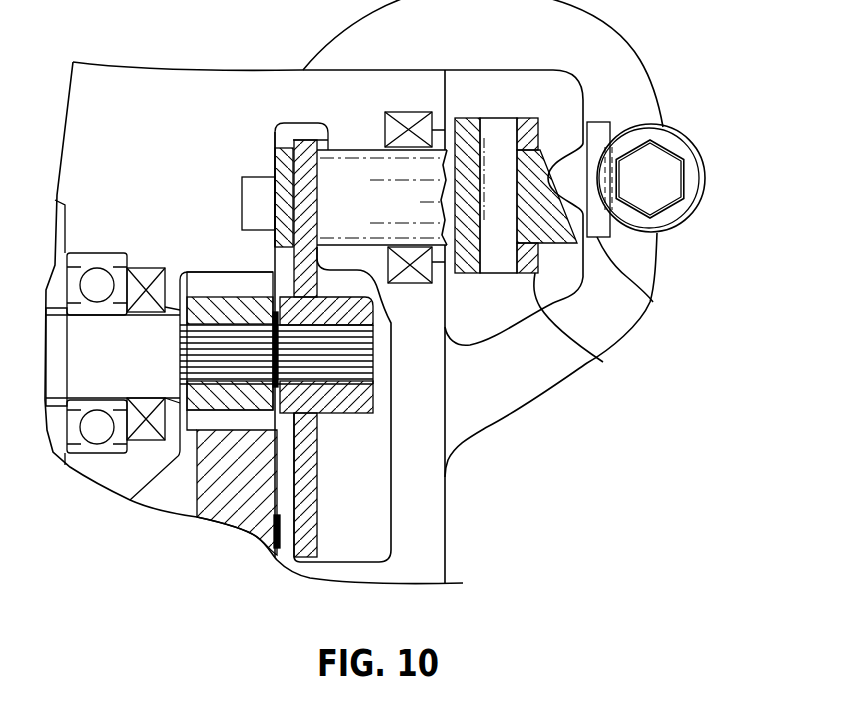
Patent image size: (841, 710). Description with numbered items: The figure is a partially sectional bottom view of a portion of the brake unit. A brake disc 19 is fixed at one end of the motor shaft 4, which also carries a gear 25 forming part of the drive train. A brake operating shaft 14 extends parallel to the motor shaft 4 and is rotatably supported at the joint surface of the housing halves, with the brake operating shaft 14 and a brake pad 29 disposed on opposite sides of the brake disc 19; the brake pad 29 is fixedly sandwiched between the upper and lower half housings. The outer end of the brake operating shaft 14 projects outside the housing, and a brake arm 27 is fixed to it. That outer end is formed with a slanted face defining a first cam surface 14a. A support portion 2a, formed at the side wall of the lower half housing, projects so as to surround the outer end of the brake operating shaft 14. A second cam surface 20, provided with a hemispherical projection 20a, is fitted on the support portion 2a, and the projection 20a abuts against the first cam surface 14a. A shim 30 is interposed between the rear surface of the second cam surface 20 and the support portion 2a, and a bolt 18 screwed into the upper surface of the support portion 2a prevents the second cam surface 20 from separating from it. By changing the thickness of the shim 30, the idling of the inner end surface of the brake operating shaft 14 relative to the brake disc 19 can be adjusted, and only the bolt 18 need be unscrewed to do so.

The support portion 2a is at (537, 378).
The motor shaft 4 is at (340, 384).
The brake operating shaft 14 is at (348, 150).
The first cam surface 14a is at (543, 158).
The bolt 18 is at (662, 160).
The brake disc 19 is at (318, 467).
The second cam surface 20 is at (650, 304).
The hemispherical projection 20a is at (573, 95).
The gear 25 is at (215, 283).
The brake arm 27 is at (603, 362).
The brake pad 29 is at (275, 153).
The shim 30 is at (610, 225).